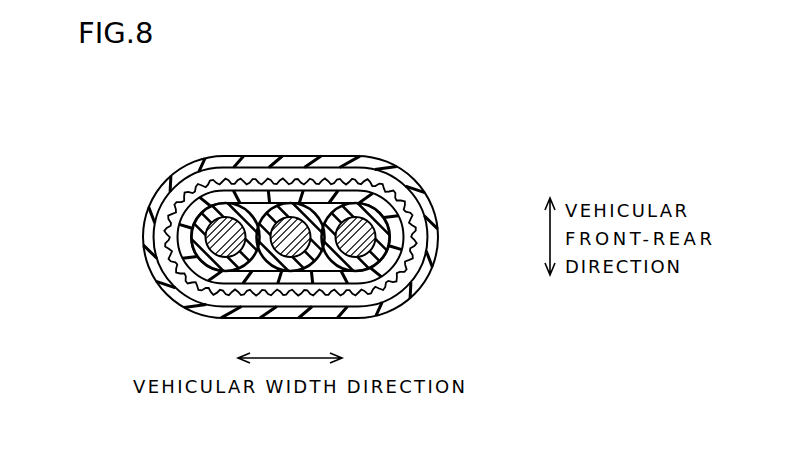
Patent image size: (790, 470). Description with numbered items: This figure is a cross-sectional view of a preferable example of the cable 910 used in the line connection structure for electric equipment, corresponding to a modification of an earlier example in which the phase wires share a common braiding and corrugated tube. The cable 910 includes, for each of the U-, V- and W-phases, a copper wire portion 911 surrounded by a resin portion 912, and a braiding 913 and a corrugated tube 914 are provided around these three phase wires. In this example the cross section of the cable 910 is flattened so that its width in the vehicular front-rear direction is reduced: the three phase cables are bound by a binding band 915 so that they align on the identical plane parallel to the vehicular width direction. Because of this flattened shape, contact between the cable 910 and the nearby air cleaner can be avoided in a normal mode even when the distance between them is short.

The cable 910 is at (160, 145).
The copper wire portion 911 is at (362, 232).
The resin portion 912 is at (383, 228).
The braiding 913 is at (420, 230).
The corrugated tube 914 is at (428, 260).
The binding band 915 is at (390, 258).